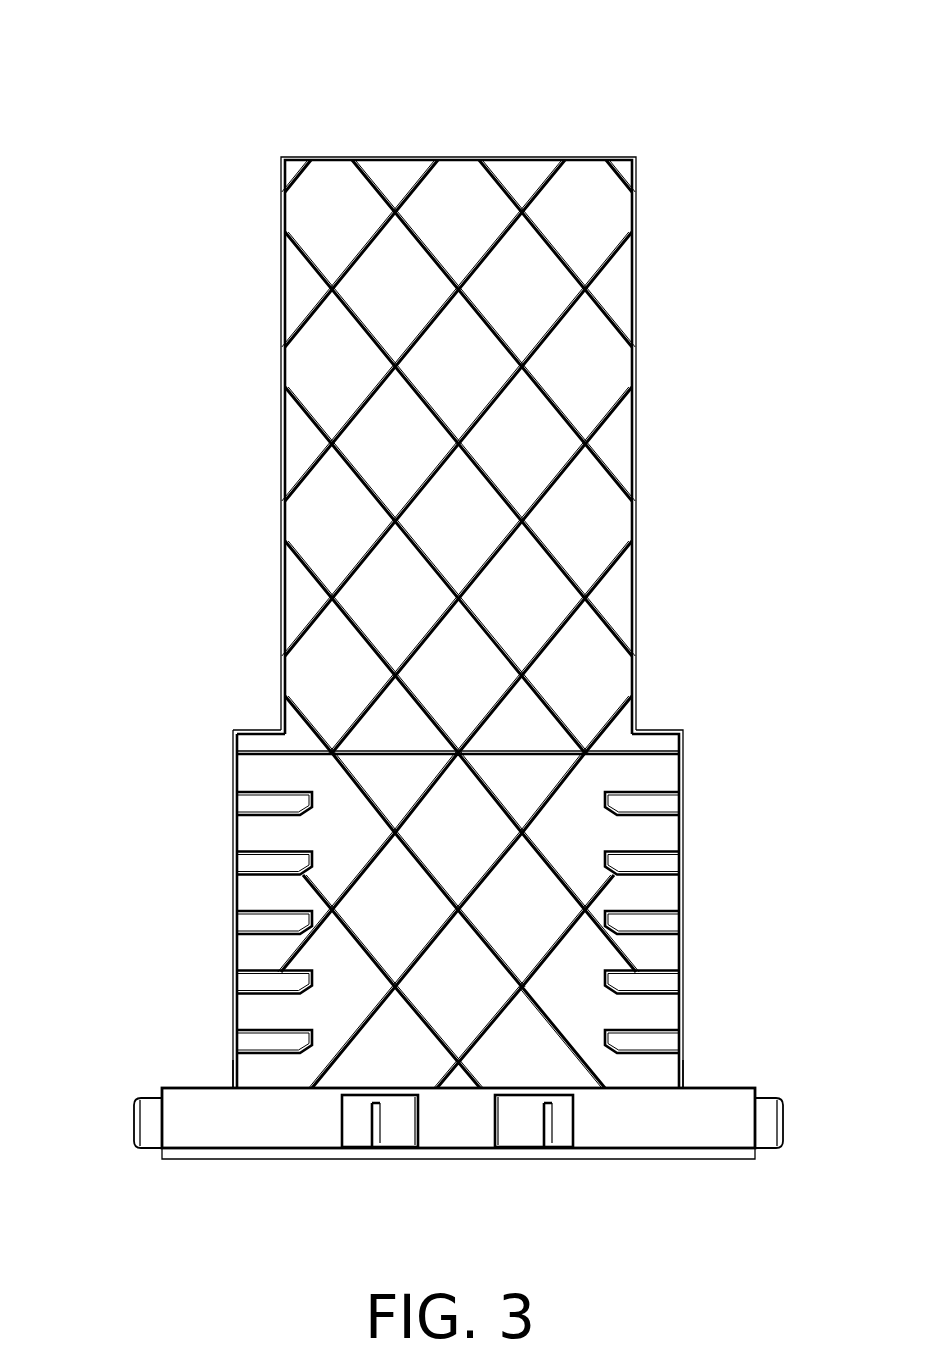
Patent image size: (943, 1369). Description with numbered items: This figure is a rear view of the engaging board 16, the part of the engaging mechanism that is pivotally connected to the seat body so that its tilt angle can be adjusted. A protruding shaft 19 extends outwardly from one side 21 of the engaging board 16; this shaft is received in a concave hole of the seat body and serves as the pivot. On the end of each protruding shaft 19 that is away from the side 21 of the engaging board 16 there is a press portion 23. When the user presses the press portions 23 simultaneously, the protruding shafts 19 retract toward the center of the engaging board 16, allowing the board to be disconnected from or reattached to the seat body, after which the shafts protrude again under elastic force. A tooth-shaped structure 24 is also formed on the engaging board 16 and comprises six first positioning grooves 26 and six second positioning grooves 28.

The engaging board 16 is at (728, 80).
The protruding shaft 19 is at (148, 1121).
The side 21 is at (162, 1152).
The press portion 23 is at (375, 1148).
The tooth-shaped structure 24 is at (203, 930).
The first positioning grooves 26 is at (693, 1073).
The second positioning grooves 28 is at (220, 1079).